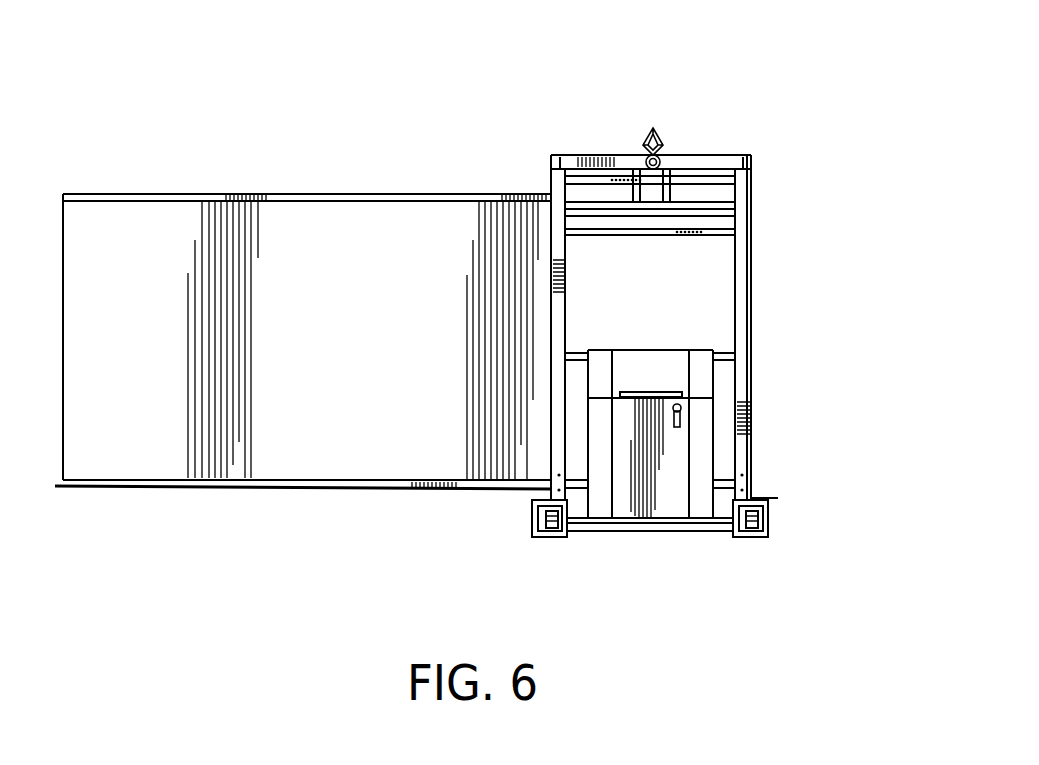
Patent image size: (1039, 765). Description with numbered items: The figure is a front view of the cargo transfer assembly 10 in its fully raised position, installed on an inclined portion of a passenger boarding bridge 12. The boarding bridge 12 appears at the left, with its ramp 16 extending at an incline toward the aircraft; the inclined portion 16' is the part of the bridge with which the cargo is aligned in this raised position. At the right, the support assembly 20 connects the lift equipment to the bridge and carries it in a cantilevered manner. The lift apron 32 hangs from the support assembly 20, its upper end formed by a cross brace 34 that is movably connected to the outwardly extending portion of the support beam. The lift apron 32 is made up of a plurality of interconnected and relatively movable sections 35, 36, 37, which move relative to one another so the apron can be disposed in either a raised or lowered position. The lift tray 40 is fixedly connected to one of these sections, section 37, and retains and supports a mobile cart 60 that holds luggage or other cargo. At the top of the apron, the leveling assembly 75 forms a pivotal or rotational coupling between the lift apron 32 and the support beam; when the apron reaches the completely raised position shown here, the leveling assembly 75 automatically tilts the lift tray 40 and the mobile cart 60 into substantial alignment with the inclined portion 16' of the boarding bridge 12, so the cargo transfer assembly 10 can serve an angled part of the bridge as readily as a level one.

The transfer assembly 10 is at (735, 270).
The passenger boarding bridge 12 is at (332, 150).
The ramp 16 is at (307, 558).
The inclined portion 16' is at (303, 563).
The support assembly 20 is at (690, 251).
The lift apron 32 is at (774, 251).
The cross brace 34 is at (722, 163).
The section 35 is at (815, 285).
The section 36 is at (770, 294).
The section 37 is at (740, 283).
The lift tray 40 is at (774, 518).
The mobile cart 60 is at (663, 343).
The leveling assembly 75 is at (670, 160).